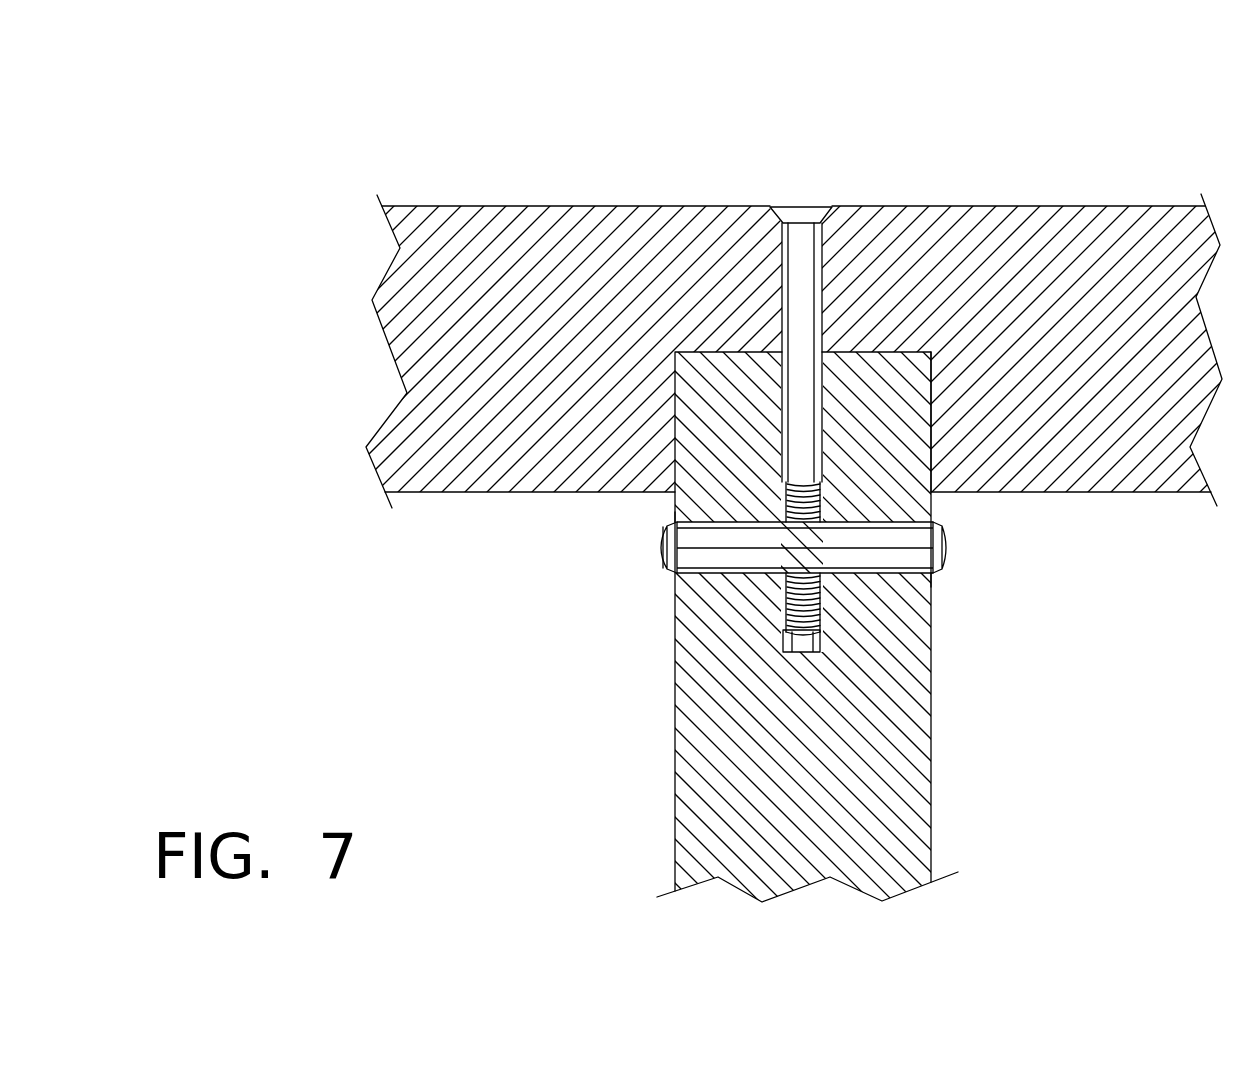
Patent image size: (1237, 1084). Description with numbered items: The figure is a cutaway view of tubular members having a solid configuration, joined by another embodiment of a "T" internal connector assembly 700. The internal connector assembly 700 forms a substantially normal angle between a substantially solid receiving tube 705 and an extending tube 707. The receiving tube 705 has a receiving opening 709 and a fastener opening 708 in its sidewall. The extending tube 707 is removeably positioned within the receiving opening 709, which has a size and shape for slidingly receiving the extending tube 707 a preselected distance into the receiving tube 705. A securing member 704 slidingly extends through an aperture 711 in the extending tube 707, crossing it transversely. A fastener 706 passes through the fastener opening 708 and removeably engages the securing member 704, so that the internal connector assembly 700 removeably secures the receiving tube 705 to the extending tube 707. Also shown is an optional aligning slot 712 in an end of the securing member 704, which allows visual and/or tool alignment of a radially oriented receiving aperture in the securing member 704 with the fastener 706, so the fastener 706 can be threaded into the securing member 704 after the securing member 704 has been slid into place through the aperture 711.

The internal connector assembly 700 is at (973, 192).
The securing member 704 is at (923, 837).
The receiving tube 705 is at (1137, 206).
The fastener 706 is at (812, 272).
The extending tube 707 is at (925, 545).
The fastener opening 708 is at (776, 216).
The receiving opening 709 is at (932, 455).
The aperture 711 is at (673, 512).
The aligning slot 712 is at (653, 550).